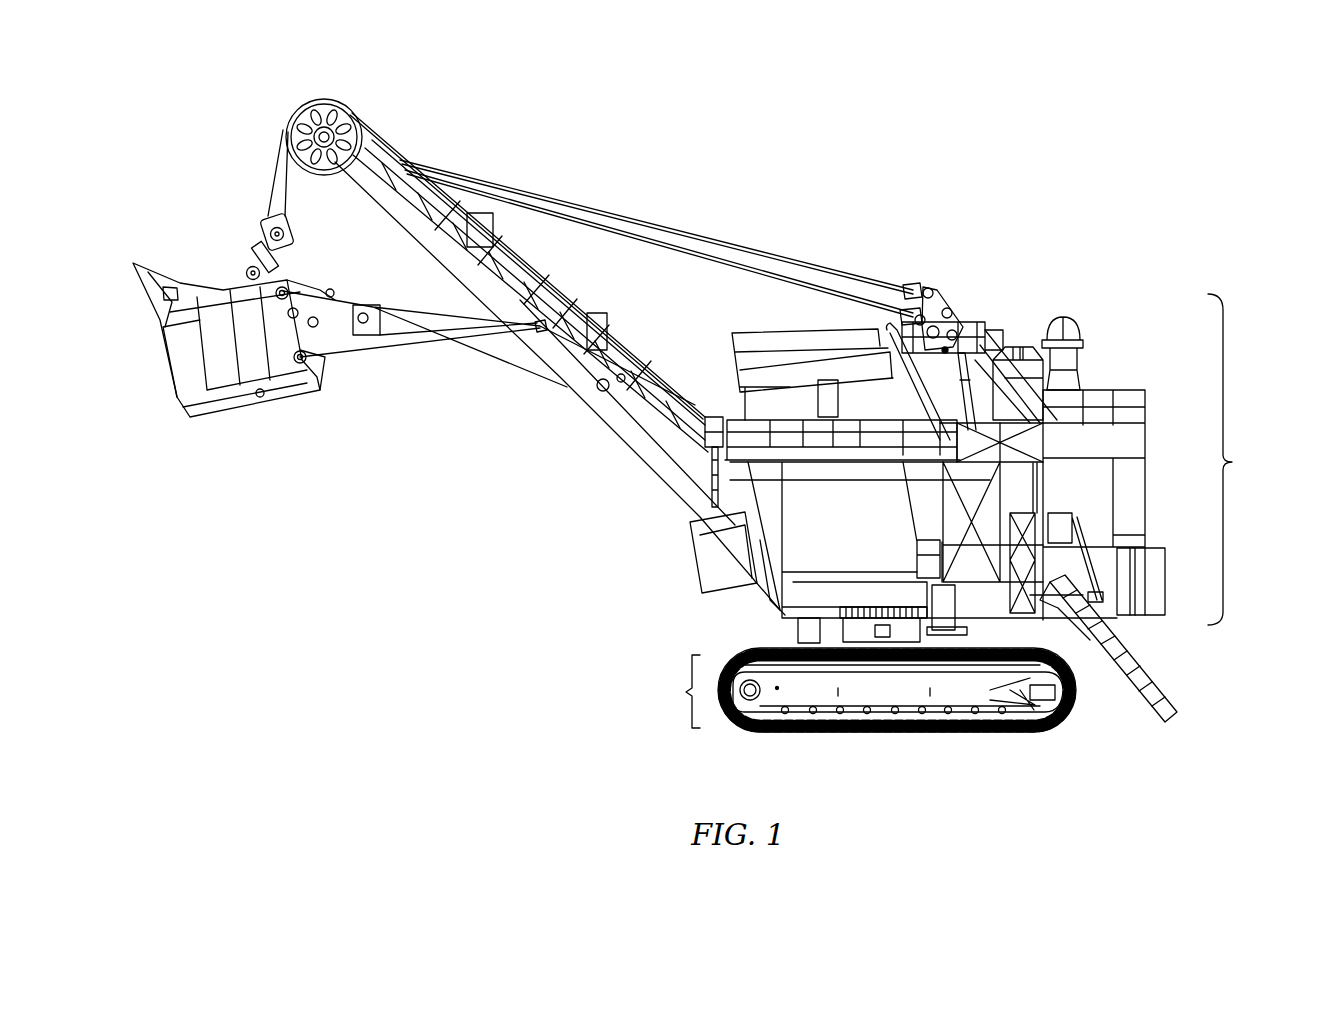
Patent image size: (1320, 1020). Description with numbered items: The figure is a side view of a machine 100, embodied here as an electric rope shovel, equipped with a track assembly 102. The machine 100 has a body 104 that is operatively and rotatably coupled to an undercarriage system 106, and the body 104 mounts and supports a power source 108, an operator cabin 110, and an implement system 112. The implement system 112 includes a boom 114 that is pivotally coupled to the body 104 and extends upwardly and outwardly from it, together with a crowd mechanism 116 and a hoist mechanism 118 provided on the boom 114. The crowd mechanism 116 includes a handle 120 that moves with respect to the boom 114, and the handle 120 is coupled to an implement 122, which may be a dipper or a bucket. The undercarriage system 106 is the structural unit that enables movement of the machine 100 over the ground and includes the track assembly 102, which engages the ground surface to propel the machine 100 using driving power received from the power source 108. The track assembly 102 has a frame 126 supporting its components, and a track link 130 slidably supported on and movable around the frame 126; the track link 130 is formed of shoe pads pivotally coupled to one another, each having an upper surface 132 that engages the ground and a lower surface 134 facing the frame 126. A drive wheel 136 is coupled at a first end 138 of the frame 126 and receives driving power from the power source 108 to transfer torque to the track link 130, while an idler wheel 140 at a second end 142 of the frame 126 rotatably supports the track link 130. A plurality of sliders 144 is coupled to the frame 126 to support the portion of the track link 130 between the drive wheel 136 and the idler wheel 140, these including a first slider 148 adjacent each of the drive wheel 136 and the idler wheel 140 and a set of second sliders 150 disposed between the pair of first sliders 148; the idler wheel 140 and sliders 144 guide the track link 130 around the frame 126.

The machine 100 is at (1092, 183).
The track assembly 102 is at (1067, 745).
The body 104 is at (999, 463).
The undercarriage system 106 is at (679, 691).
The power source 108 is at (1165, 585).
The operator cabin 110 is at (793, 395).
The implement system 112 is at (179, 127).
The boom 114 is at (460, 264).
The crowd mechanism 116 is at (436, 398).
The hoist mechanism 118 is at (284, 104).
The handle 120 is at (503, 352).
The implement 122 is at (229, 428).
The frame 126 is at (922, 712).
The track link 130 is at (830, 745).
The upper surface 132 is at (1055, 660).
The lower surface 134 is at (948, 712).
The drive wheel 136 is at (1005, 712).
The first end 138 is at (1075, 719).
The idler wheel 140 is at (758, 726).
The second end 142 is at (730, 730).
The sliders 144 is at (865, 680).
The first slider 148 is at (968, 712).
The second sliders 150 is at (908, 712).